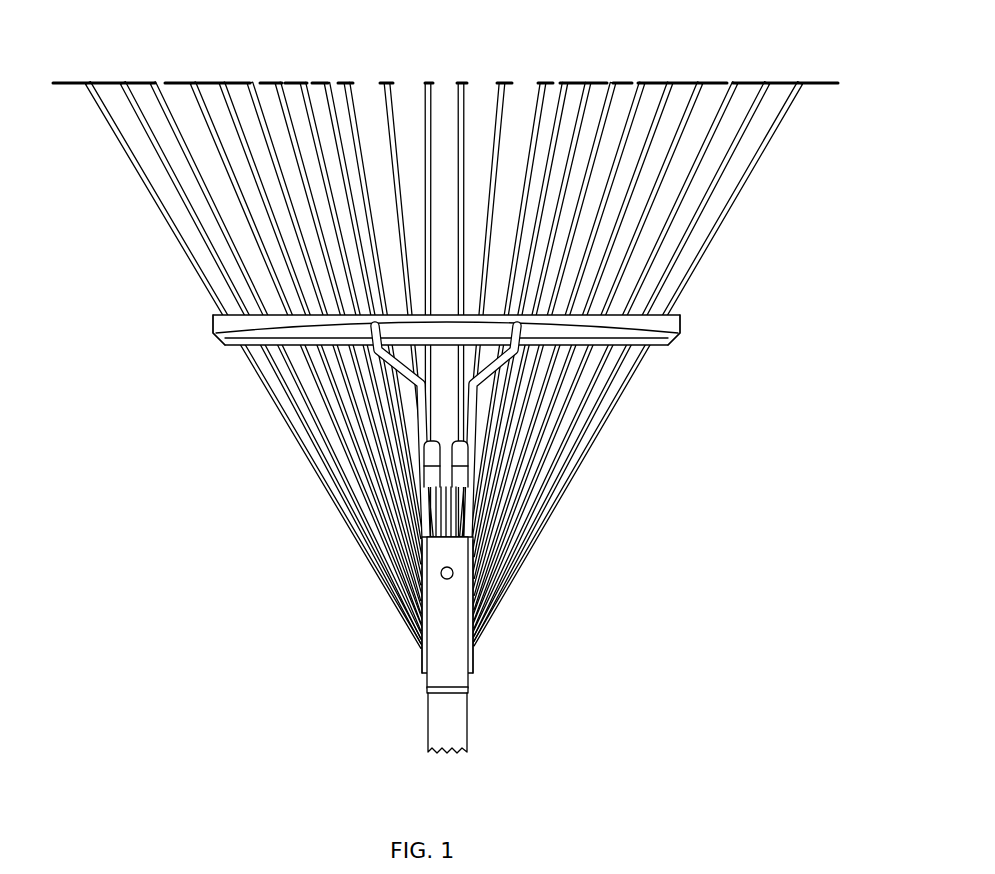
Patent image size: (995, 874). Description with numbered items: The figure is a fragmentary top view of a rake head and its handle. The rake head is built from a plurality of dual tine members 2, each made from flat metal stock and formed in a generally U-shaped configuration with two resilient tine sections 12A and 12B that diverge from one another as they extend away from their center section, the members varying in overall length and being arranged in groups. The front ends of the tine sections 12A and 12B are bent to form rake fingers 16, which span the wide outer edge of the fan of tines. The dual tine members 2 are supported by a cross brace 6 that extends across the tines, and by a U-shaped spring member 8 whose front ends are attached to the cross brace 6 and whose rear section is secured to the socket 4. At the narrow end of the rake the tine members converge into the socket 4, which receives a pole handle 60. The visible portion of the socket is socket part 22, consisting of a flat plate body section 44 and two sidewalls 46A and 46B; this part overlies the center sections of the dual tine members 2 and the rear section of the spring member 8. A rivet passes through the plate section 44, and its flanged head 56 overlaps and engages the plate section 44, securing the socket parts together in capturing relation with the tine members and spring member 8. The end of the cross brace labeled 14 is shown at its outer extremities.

The dual tine member 2 is at (448, 398).
The socket 4 is at (415, 739).
The cross brace 6 is at (489, 340).
The U-shaped spring member 8 is at (480, 406).
The tine section 12A is at (768, 135).
The tine section 12B is at (172, 225).
The crossbar end 14 is at (214, 333).
The rake finger 16 is at (90, 82).
The socket part 22 is at (412, 590).
The flat plate body section 44 is at (373, 622).
The sidewall 46A is at (474, 670).
The sidewall 46B is at (421, 656).
The flanged head 56 is at (440, 576).
The pole handle 60 is at (490, 700).